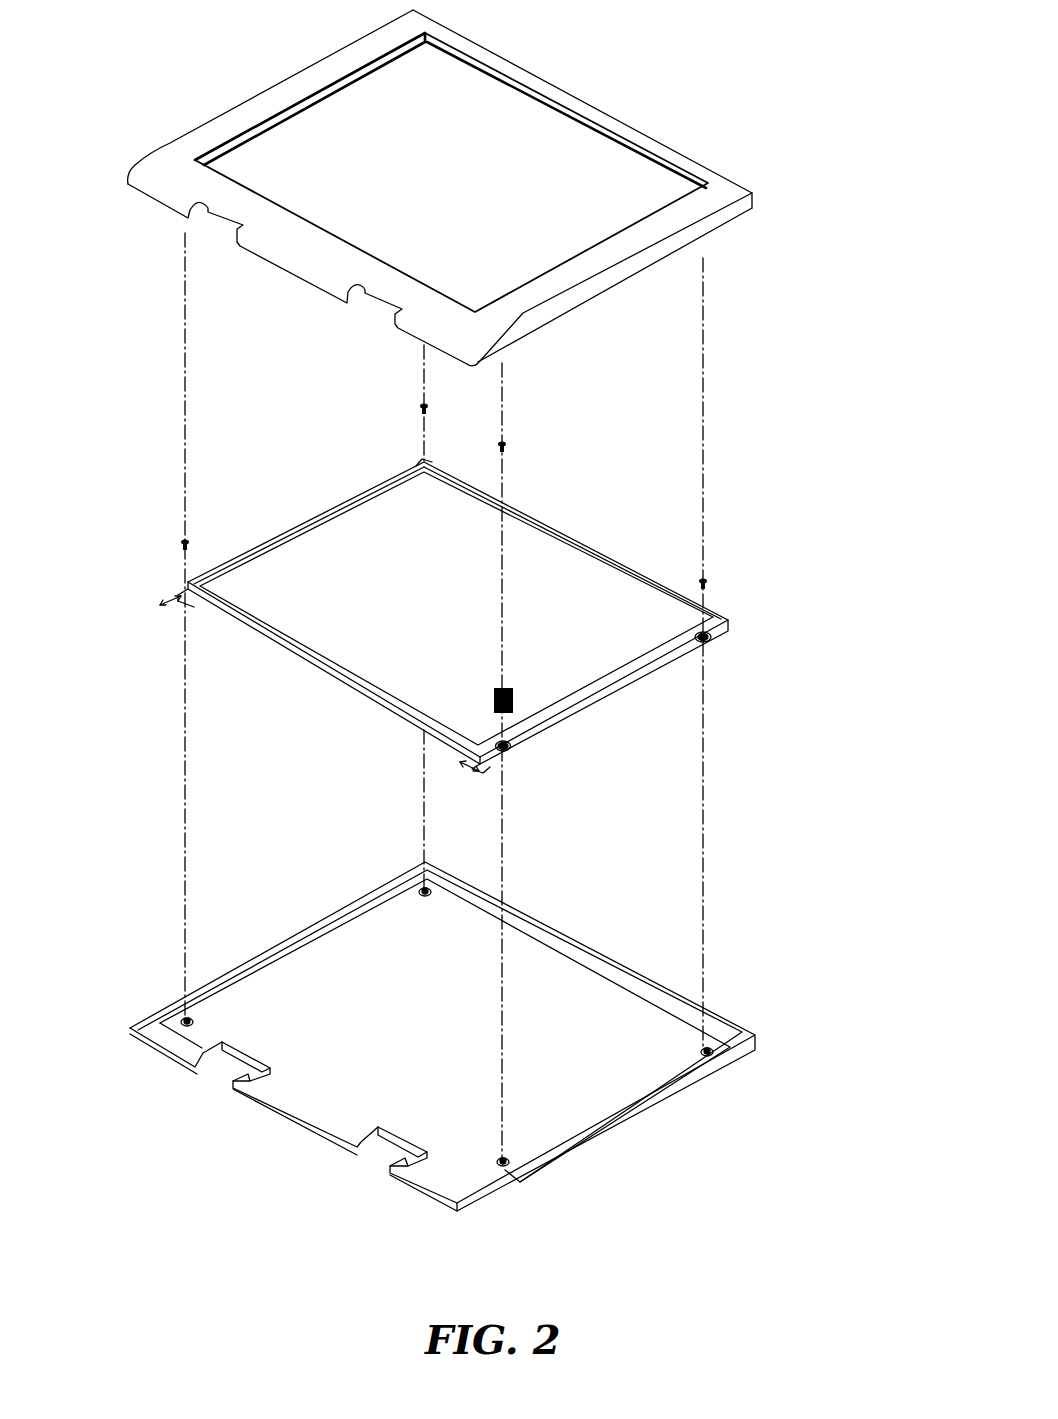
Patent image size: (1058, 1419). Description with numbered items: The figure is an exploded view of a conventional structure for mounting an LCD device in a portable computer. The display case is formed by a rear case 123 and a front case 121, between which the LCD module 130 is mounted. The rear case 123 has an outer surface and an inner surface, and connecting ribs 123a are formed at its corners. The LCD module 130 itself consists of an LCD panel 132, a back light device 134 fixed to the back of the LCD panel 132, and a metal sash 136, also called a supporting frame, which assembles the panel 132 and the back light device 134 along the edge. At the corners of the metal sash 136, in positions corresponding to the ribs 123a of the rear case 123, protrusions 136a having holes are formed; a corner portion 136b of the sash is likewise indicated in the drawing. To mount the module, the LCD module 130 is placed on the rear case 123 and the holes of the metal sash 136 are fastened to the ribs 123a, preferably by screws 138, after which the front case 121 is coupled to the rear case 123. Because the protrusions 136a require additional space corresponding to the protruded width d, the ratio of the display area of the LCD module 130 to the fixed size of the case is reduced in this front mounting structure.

The front case 121 is at (722, 190).
The rear case 123 is at (485, 1034).
The connecting ribs 123a is at (422, 888).
The LCD module 130 is at (500, 610).
The LCD panel 132 is at (550, 563).
The back light device 134 is at (648, 655).
The metal sash 136 is at (453, 610).
The protrusions 136a is at (503, 750).
The upper end portion of supporting frame 136b is at (422, 462).
The screws 138 is at (182, 547).